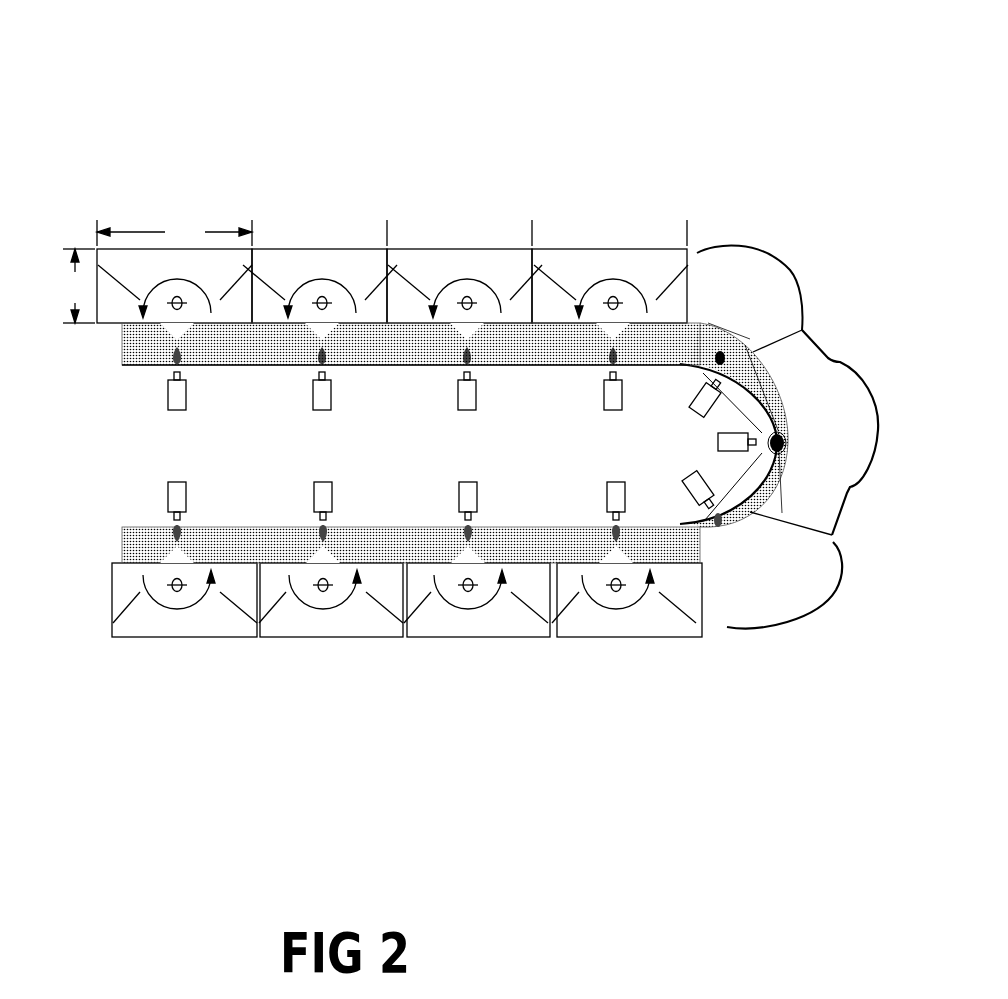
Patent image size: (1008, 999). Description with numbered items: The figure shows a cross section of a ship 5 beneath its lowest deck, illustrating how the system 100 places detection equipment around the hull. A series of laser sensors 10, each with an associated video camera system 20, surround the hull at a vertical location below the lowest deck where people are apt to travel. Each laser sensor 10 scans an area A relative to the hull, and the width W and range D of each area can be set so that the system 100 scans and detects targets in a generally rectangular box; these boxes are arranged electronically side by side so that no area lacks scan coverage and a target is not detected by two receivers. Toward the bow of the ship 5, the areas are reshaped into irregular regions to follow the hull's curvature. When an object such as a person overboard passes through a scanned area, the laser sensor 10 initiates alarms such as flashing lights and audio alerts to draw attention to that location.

The system 100 is at (677, 78).
The ship 5 is at (122, 367).
The laser sensor 10 is at (181, 360).
The video camera system 20 is at (168, 408).